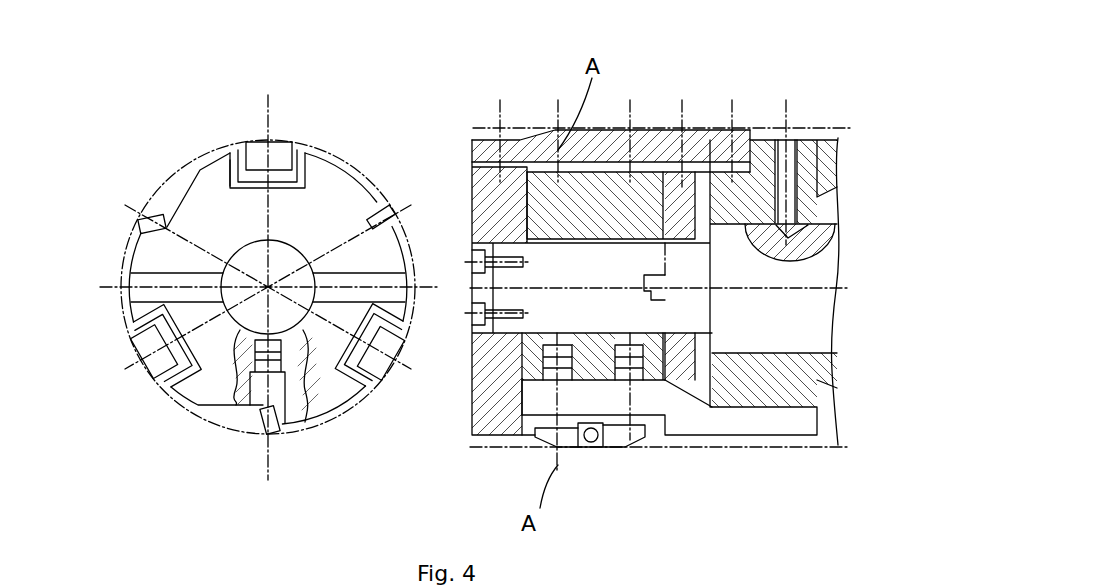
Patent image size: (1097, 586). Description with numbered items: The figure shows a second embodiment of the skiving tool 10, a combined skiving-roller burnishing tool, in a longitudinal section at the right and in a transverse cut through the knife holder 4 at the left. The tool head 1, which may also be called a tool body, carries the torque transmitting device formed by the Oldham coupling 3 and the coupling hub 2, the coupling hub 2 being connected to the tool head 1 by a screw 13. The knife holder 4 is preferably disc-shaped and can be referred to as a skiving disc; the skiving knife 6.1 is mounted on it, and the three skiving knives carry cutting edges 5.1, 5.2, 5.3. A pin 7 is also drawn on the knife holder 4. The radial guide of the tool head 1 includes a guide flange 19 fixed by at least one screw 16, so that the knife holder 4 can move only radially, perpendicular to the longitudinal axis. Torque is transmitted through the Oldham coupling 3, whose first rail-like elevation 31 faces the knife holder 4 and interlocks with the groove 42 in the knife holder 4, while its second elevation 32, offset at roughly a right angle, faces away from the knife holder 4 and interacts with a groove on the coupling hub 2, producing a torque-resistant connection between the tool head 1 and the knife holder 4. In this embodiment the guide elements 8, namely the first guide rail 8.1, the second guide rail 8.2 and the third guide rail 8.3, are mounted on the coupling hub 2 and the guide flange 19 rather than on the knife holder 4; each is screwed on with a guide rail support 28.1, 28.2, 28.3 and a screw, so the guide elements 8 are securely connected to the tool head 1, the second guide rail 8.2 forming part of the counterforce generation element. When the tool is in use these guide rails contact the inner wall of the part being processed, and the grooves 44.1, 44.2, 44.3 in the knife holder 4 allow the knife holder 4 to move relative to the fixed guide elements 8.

The tool head 1 is at (783, 444).
The coupling hub 2 is at (812, 410).
The Oldham coupling 3 is at (682, 372).
The knife holder 4 is at (321, 388).
The cutting edge 5.1 is at (266, 435).
The cutting edge 5.2 is at (155, 218).
The cutting edge 5.3 is at (388, 212).
The skiving knife 6.1 is at (543, 400).
The pin 7 is at (257, 357).
The guide elements 8 is at (522, 152).
The first guide rail 8.1 is at (150, 348).
The second guide rail 8.2 is at (256, 143).
The third guide rail 8.3 is at (377, 362).
The skiving tool 10 is at (798, 82).
The screw 13 is at (790, 152).
The screw 16 is at (478, 252).
The guide flange 19 is at (482, 403).
The guide rail support 28.1 is at (163, 378).
The guide rail support 28.2 is at (293, 162).
The guide rail support 28.3 is at (397, 328).
The first rail-like elevation 31 is at (643, 292).
The second elevation 32 is at (694, 376).
The groove 42 is at (151, 281).
The groove 44.1 is at (175, 322).
The groove 44.2 is at (233, 153).
The groove 44.3 is at (338, 390).